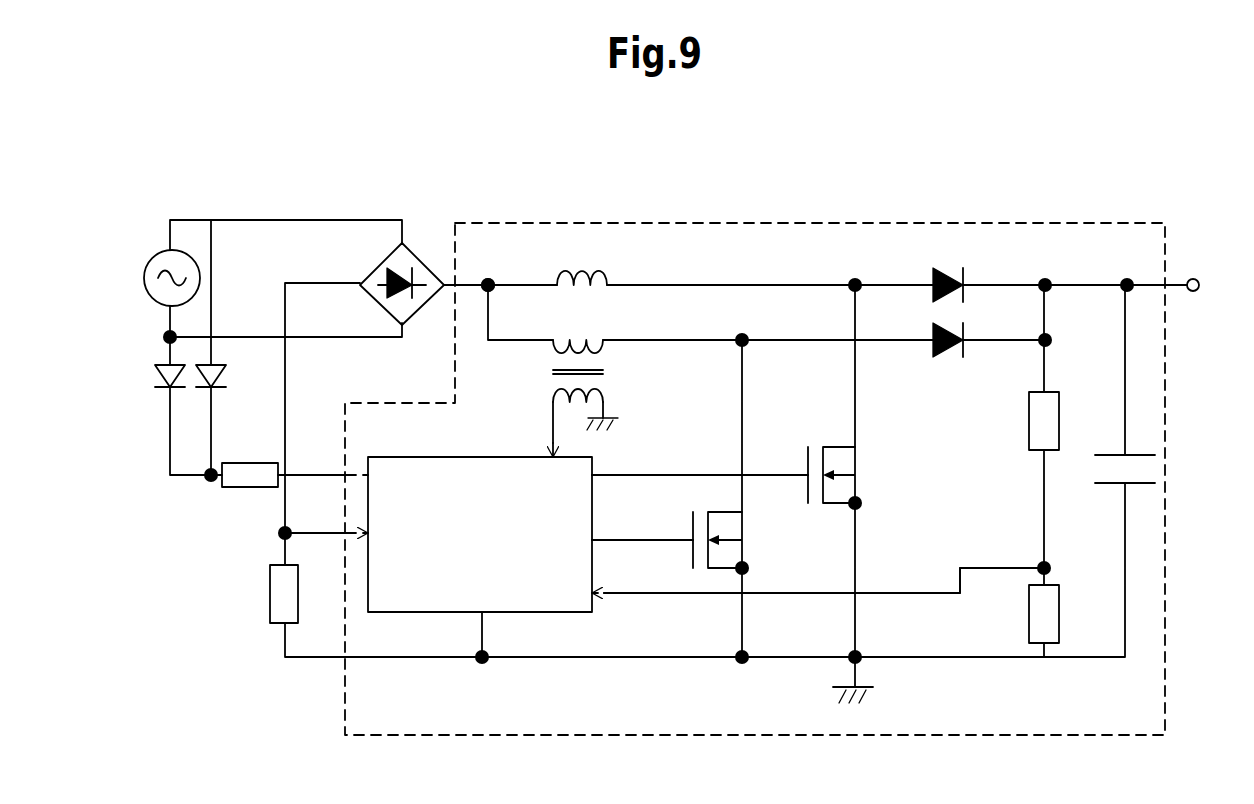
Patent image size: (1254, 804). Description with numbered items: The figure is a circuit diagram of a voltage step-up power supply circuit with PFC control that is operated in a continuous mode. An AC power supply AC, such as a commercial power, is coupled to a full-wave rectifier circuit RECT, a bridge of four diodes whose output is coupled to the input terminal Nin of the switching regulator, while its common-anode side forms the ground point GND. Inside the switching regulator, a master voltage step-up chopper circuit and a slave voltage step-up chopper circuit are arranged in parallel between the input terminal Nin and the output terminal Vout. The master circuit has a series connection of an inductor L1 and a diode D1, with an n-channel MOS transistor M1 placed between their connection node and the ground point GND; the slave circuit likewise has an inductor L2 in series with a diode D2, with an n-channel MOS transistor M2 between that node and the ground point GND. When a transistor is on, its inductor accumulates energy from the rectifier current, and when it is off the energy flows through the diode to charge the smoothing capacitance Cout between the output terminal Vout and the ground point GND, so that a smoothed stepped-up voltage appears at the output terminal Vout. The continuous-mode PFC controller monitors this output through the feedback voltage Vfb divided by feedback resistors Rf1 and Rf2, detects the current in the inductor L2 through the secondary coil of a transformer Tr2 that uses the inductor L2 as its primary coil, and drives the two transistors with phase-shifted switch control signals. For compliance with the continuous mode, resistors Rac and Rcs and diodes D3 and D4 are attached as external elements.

The AC power supply AC is at (149, 278).
The diode D3 is at (160, 362).
The diode D4 is at (226, 362).
The full-wave rectifier circuit RECT is at (415, 256).
The input terminal Nin is at (492, 282).
The inductor L1 is at (614, 260).
The inductor L2 is at (594, 337).
The transformer Tr2 is at (620, 343).
The feedback voltage Vfb is at (700, 597).
The n-channel MOS transistor M1 is at (856, 475).
The n-channel MOS transistor M2 is at (742, 537).
The diode D1 is at (946, 268).
The diode D2 is at (946, 360).
The output terminal Vout is at (1219, 285).
The feedback resistor Rf1 is at (1064, 421).
The feedback resistor Rf2 is at (1063, 614).
The smoothing capacitance Cout is at (1158, 469).
The resistor Rac is at (245, 490).
The resistor Rcs is at (268, 590).
The ground point GND is at (879, 682).